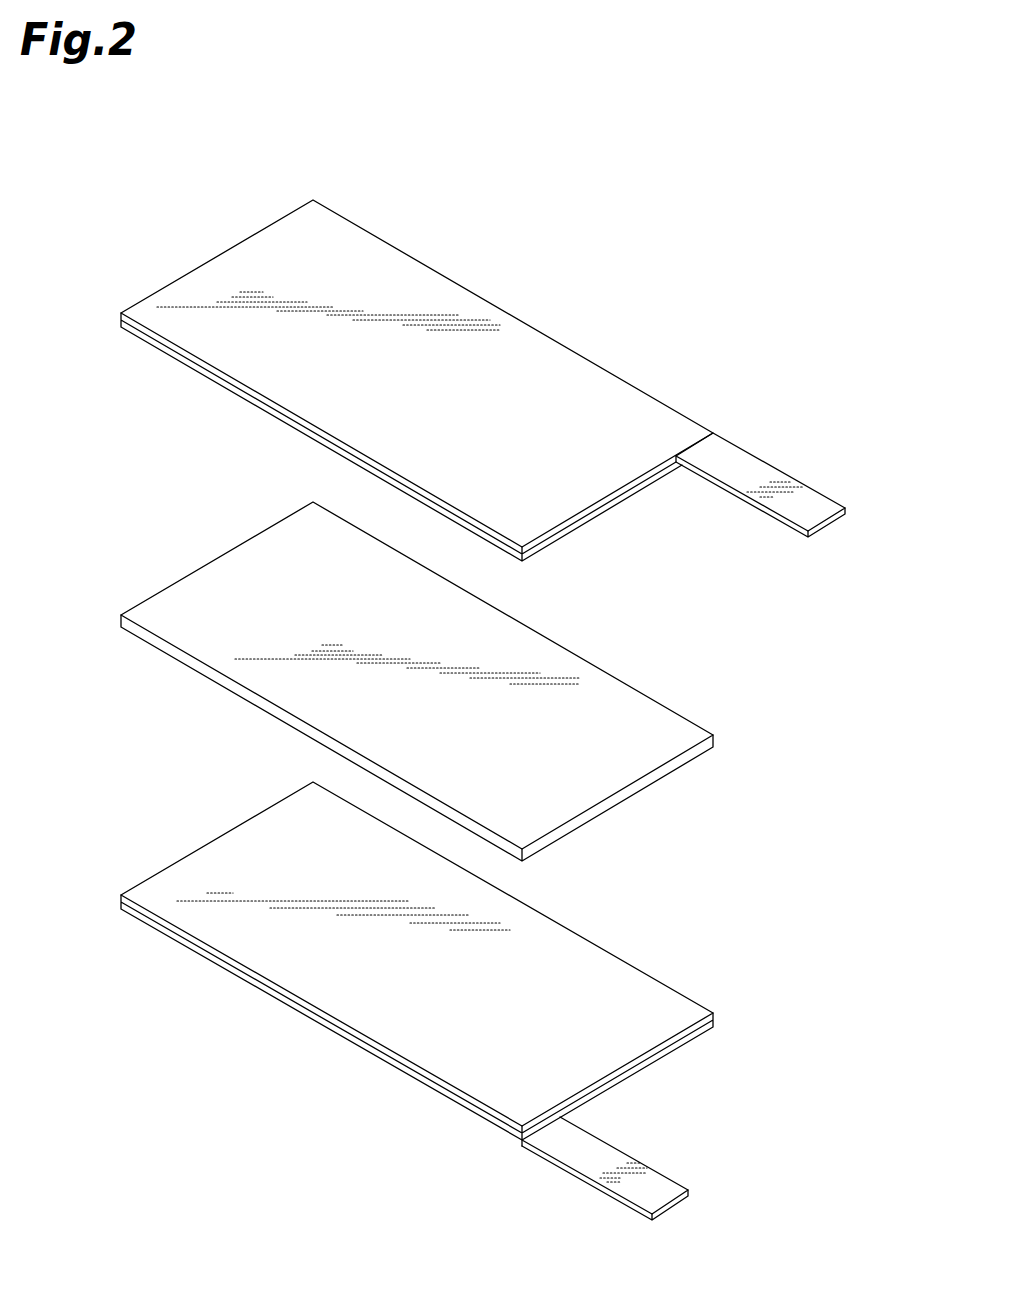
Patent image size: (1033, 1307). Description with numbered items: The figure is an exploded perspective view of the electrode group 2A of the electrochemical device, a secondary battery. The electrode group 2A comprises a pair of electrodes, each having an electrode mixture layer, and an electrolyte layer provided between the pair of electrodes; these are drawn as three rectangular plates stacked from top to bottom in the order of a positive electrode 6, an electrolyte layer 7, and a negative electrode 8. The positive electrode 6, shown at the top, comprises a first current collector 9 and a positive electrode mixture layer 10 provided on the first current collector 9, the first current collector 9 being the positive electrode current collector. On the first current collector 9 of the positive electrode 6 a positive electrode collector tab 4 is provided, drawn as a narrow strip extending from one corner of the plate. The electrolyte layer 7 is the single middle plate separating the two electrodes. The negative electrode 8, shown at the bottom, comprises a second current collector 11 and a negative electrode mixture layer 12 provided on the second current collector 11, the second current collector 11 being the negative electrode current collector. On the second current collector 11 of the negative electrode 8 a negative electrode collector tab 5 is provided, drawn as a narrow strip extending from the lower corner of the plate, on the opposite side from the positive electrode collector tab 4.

The electrode group 2A is at (710, 212).
The positive electrode 6 is at (687, 368).
The first current collector 9 is at (353, 240).
The positive electrode mixture layer 10 is at (600, 512).
The positive electrode collector tab 4 is at (812, 513).
The electrolyte layer 7 is at (652, 716).
The negative electrode 8 is at (687, 965).
The negative electrode mixture layer 12 is at (640, 1030).
The second current collector 11 is at (615, 1087).
The negative electrode collector tab 5 is at (650, 1193).